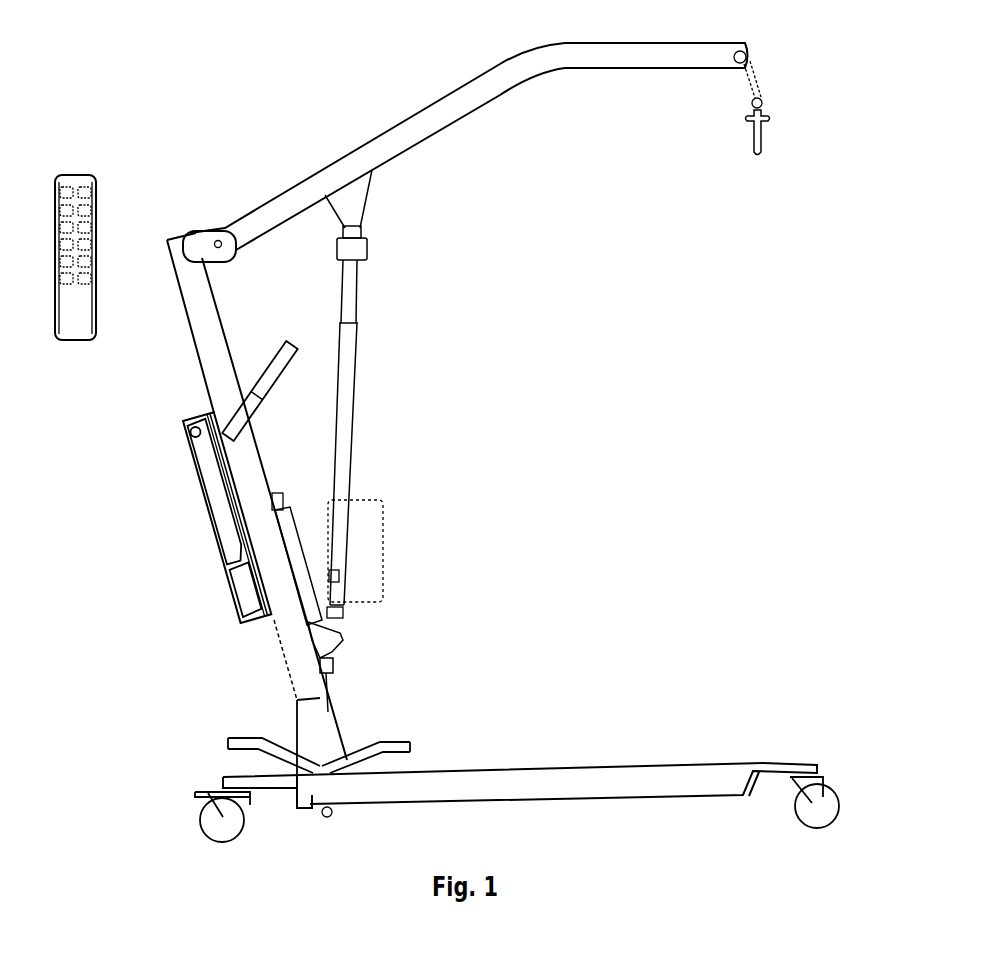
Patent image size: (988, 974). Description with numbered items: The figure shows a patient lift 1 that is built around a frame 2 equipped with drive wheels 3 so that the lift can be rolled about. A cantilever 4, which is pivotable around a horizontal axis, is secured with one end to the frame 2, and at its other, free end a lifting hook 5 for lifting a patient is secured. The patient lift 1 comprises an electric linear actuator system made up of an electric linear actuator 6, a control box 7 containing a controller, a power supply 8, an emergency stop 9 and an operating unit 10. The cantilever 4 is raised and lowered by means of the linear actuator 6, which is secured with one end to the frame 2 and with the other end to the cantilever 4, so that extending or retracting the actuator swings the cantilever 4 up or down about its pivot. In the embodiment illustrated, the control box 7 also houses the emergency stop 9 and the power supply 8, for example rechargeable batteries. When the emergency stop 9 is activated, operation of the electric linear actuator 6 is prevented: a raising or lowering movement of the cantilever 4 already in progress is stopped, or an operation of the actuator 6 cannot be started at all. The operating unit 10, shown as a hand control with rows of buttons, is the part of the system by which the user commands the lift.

The patient lift 1 is at (336, 70).
The frame 2 is at (313, 727).
The drive wheels 3 is at (222, 820).
The cantilever 4 is at (493, 87).
The lifting hook 5 is at (762, 133).
The electric linear actuator 6 is at (380, 512).
The control box 7 is at (200, 561).
The power supply 8 is at (212, 508).
The emergency stop 9 is at (182, 428).
The operating unit 10 is at (90, 182).